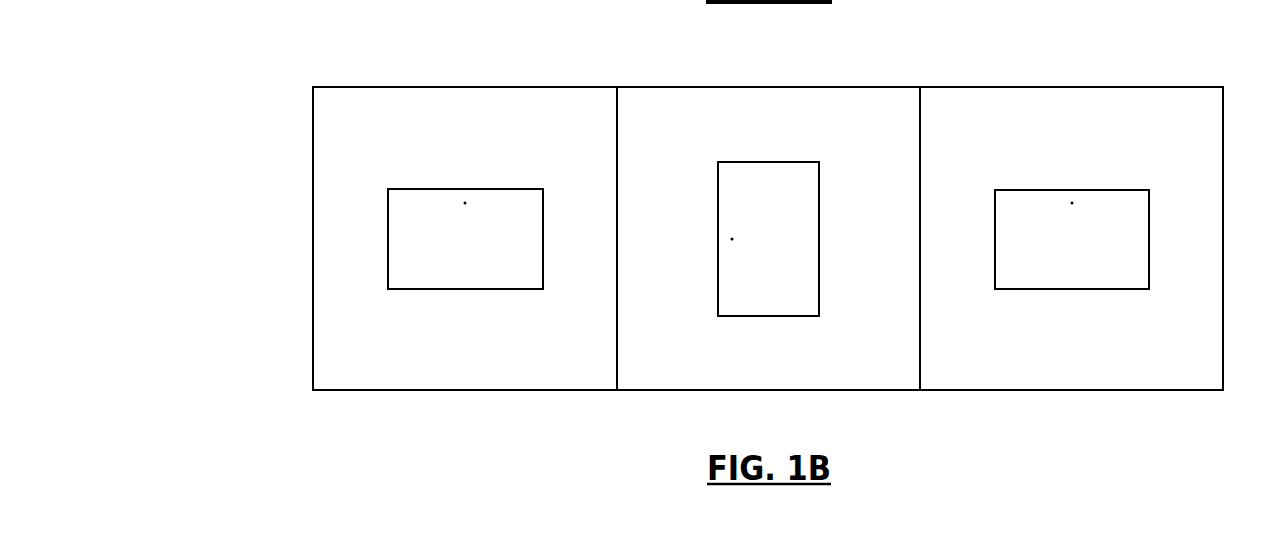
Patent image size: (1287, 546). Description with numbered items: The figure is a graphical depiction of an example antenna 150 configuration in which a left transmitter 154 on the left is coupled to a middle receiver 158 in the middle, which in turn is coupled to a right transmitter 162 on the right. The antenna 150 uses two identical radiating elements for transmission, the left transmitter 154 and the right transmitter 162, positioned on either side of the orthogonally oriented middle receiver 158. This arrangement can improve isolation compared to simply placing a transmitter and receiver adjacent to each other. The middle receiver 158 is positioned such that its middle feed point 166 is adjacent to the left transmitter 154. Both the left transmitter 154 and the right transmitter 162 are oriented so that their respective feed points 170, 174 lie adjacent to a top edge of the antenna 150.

The antenna 150 is at (334, 19).
The left transmitter 154 is at (388, 270).
The middle receiver 158 is at (783, 161).
The right transmitter 162 is at (1150, 257).
The middle feed point 166 is at (732, 239).
The feed point 170 is at (465, 203).
The feed point 174 is at (1072, 203).